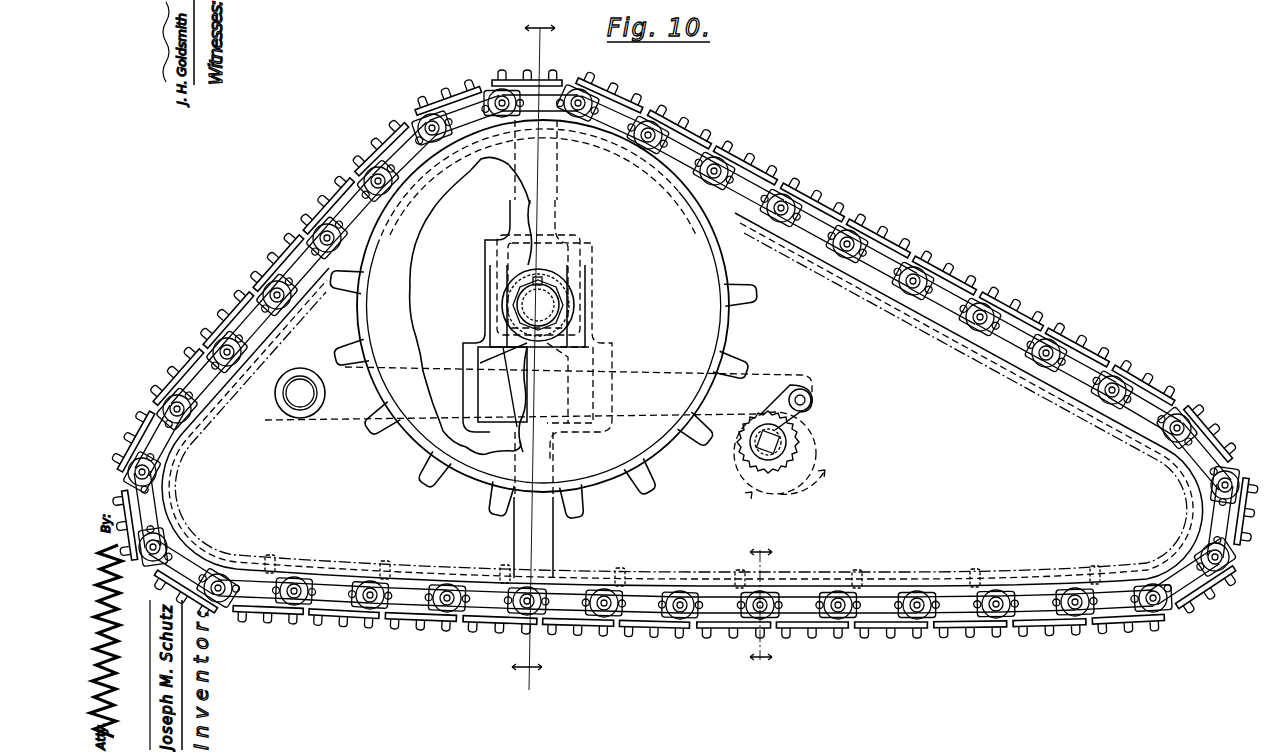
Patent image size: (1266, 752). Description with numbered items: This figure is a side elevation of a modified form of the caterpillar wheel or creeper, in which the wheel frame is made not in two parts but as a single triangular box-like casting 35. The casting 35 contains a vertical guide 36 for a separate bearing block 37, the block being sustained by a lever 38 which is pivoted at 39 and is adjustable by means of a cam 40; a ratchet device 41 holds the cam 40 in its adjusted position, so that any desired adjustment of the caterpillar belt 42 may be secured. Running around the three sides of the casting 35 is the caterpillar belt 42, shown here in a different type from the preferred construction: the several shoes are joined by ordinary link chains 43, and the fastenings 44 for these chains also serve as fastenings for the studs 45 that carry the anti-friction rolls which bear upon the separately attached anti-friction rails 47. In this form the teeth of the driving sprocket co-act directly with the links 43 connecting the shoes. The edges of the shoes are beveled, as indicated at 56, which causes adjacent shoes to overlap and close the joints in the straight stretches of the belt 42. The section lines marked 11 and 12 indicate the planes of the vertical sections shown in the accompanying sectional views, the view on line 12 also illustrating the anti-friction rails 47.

The section line 11- 11 is at (533, 349).
The section line 12- 12 is at (759, 606).
The triangular box-like casting 35 is at (682, 400).
The vertical guide 36 is at (512, 254).
The bearing block 37 is at (500, 281).
The lever 38 is at (488, 378).
The pivot 39 is at (298, 400).
The cam 40 is at (807, 445).
The ratchet device 41 is at (752, 447).
The caterpillar belt 42 is at (681, 351).
The link chains 43 is at (878, 262).
The fastenings 44 is at (663, 627).
The studs 45 is at (858, 592).
The anti-friction rails 47 is at (578, 578).
The beveled edges of the shoes 56 is at (500, 624).